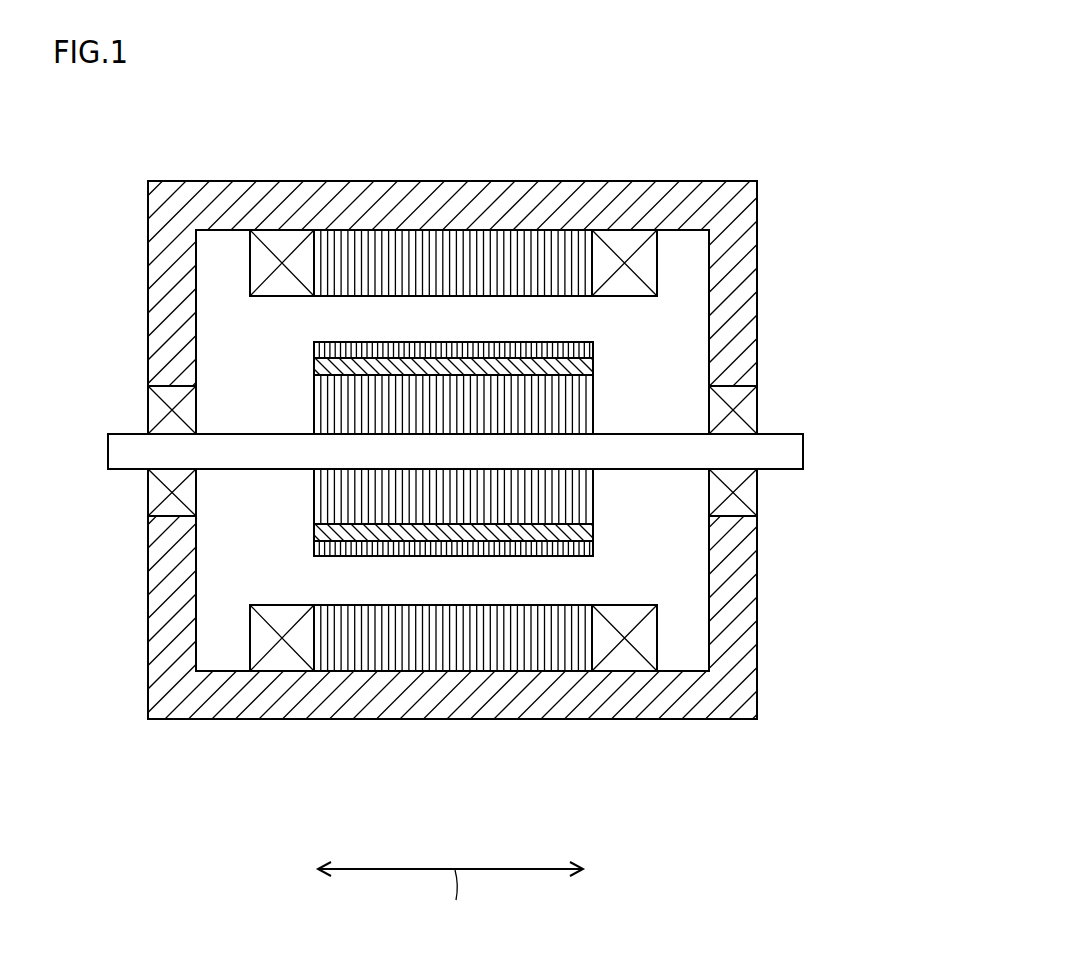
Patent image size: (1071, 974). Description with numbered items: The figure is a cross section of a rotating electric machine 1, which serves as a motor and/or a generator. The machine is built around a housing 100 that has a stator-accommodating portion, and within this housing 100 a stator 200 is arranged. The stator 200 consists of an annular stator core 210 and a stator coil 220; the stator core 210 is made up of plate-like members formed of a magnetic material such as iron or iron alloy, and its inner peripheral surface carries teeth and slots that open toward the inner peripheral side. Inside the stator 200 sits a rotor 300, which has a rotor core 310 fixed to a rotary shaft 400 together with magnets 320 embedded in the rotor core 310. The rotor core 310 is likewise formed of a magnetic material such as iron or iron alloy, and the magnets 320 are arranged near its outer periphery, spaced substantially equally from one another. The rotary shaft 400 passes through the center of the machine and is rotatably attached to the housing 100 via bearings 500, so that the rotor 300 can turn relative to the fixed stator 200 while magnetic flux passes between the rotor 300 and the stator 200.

The rotating electric machine 1 is at (138, 160).
The housing 100 is at (752, 587).
The stator 200 is at (453, 453).
The stator core 210 is at (453, 250).
The stator coil 220 is at (558, 113).
The rotor 300 is at (615, 439).
The rotor core 310 is at (585, 390).
The magnets 320 is at (585, 362).
The rotary shaft 400 is at (788, 447).
The bearings 500 is at (162, 412).